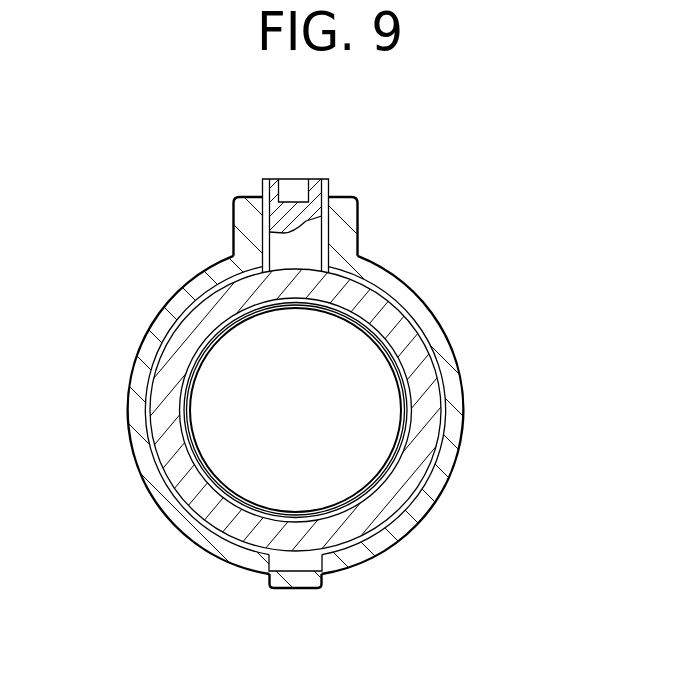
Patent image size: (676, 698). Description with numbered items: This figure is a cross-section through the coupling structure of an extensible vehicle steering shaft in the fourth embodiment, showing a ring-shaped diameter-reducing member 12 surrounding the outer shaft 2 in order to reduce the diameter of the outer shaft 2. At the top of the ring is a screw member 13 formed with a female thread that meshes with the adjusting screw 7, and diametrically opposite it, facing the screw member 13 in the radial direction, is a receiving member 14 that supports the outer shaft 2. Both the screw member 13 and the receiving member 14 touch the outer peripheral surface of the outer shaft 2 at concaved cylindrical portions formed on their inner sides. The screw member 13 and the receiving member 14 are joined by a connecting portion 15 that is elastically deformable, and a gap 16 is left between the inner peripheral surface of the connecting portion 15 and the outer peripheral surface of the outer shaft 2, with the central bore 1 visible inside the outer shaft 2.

The bore 1 is at (357, 445).
The outer shaft 2 is at (427, 437).
The adjusting screw 7 is at (301, 180).
The diameter-reducing member 12 is at (423, 237).
The screw member 13 is at (243, 218).
The receiving member 14 is at (298, 574).
The connecting portion 15 is at (135, 437).
The gap 16 is at (138, 382).